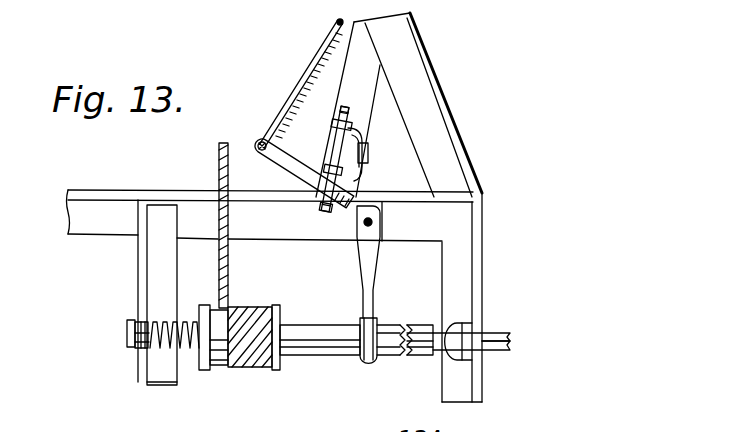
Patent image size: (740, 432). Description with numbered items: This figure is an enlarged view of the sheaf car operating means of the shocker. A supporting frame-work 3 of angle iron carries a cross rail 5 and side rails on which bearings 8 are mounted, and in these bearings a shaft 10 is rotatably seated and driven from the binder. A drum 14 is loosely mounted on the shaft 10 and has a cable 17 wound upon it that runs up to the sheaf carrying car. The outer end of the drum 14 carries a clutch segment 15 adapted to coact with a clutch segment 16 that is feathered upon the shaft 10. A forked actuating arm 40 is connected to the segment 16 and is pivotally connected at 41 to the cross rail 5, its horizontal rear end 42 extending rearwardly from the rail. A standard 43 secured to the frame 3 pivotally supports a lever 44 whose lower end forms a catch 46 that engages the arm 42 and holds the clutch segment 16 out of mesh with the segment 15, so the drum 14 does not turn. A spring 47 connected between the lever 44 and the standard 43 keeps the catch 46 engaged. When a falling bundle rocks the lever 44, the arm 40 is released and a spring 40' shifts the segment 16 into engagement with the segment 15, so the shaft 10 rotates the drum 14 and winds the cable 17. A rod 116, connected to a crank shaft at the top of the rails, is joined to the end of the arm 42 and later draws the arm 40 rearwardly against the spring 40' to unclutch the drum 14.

The supporting frame-work 3 is at (450, 182).
The cross rail 5 is at (283, 197).
The bearings 8 is at (150, 350).
The shaft 10 is at (493, 350).
The drum 14 is at (215, 367).
The clutch segment 15 is at (418, 353).
The clutch segment 16 is at (327, 356).
The cable 17 is at (218, 172).
The forked actuating arm 40 is at (391, 319).
The spring 40' is at (138, 311).
The pivotal connection 41 is at (363, 232).
The rear end of actuating arm 42 is at (258, 142).
The standard 43 is at (333, 133).
The lever 44 is at (352, 110).
The catch 46 is at (330, 213).
The spring 47 is at (363, 152).
The rod 116 is at (311, 64).